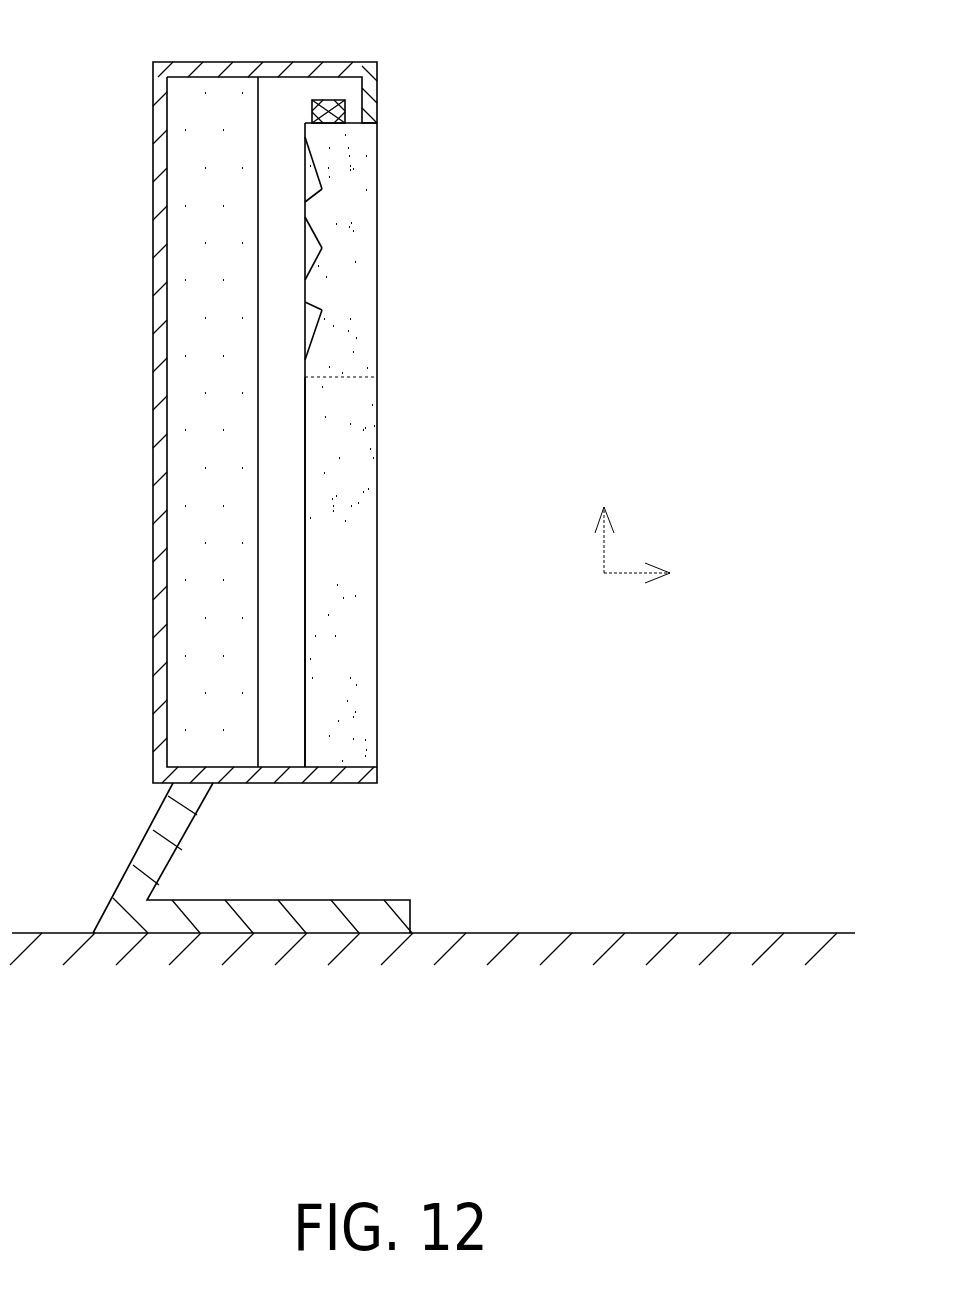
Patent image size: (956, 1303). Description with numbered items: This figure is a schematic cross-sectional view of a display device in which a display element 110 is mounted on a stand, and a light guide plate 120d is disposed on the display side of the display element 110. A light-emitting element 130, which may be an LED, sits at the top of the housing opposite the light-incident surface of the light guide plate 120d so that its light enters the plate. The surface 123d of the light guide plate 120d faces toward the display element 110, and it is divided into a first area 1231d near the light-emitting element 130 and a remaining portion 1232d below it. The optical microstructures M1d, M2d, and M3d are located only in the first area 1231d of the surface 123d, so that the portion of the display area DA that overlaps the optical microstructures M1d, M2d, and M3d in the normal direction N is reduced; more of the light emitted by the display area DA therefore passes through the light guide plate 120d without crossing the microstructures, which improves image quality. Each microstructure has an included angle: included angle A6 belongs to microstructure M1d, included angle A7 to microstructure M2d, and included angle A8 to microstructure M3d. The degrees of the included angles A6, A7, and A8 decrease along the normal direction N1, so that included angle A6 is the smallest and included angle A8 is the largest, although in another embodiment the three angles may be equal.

The display element 110 is at (205, 113).
The light-emitting element 130 is at (333, 100).
The light guide plate 120d is at (362, 595).
The surface 123d is at (282, 452).
The first area 1231d is at (289, 263).
The second portion of side surface 1232d is at (307, 743).
The included angle A6 is at (307, 167).
The optical microstructure M1d is at (307, 185).
The included angle A7 is at (307, 243).
The optical microstructure M2d is at (307, 258).
The included angle A8 is at (307, 327).
The optical microstructure M3d is at (307, 337).
The display area DA is at (258, 562).
The normal direction N1 is at (601, 526).
The normal direction N is at (648, 574).